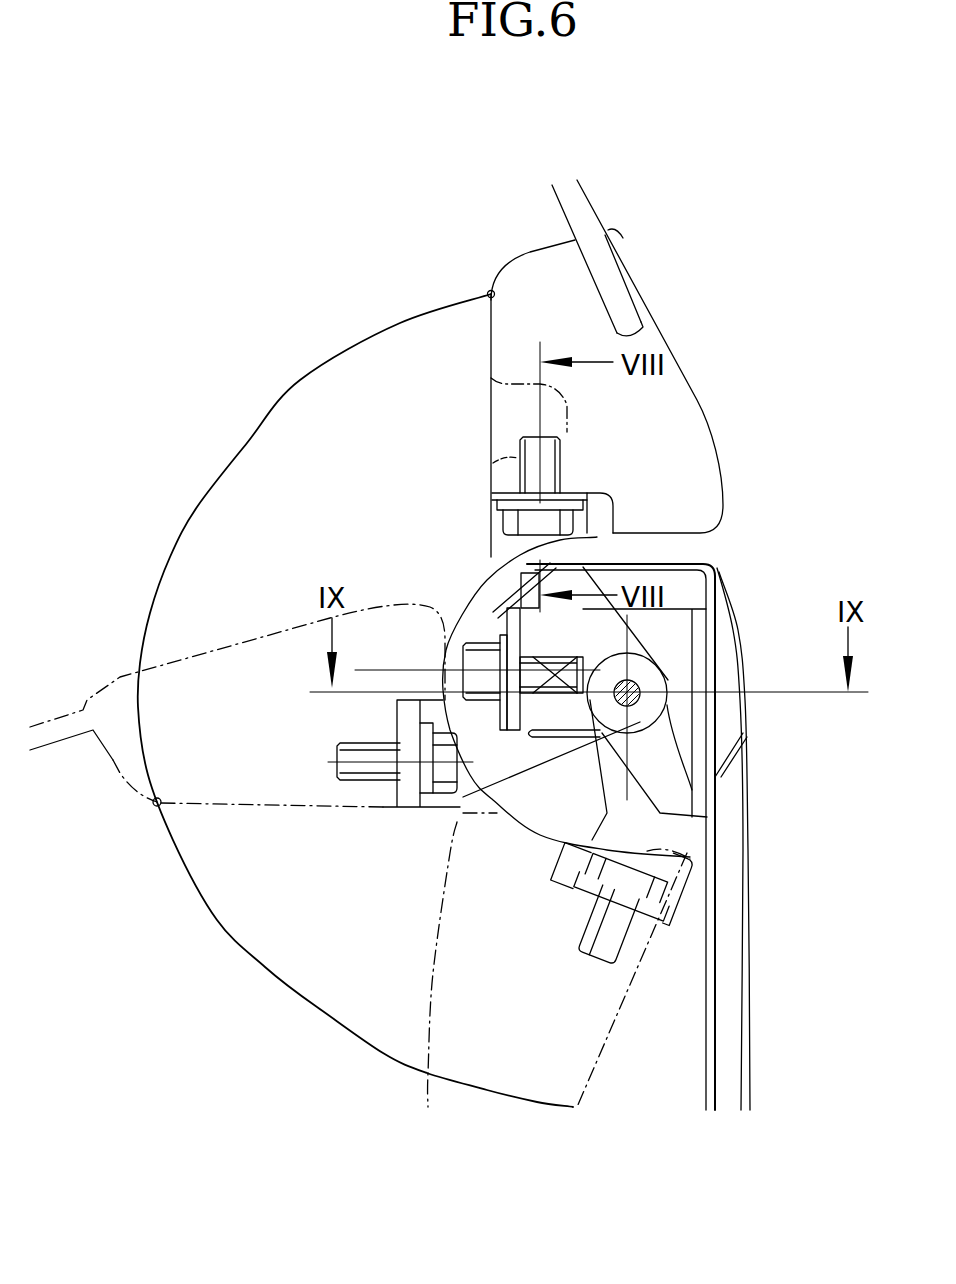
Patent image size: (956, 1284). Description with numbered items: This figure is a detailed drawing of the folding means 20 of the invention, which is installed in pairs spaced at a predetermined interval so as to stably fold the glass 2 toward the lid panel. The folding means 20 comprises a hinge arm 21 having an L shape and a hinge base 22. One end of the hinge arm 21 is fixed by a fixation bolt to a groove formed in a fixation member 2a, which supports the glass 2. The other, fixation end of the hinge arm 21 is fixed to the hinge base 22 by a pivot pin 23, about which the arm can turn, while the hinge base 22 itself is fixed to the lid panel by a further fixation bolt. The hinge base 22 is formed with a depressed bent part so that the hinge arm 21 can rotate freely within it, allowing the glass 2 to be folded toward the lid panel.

The glass 2 is at (613, 288).
The fixation member 2a is at (670, 428).
The folding means 20 is at (460, 482).
The hinge arm 21 is at (502, 548).
The hinge base 22 is at (663, 643).
The pivot pin 23 is at (641, 697).